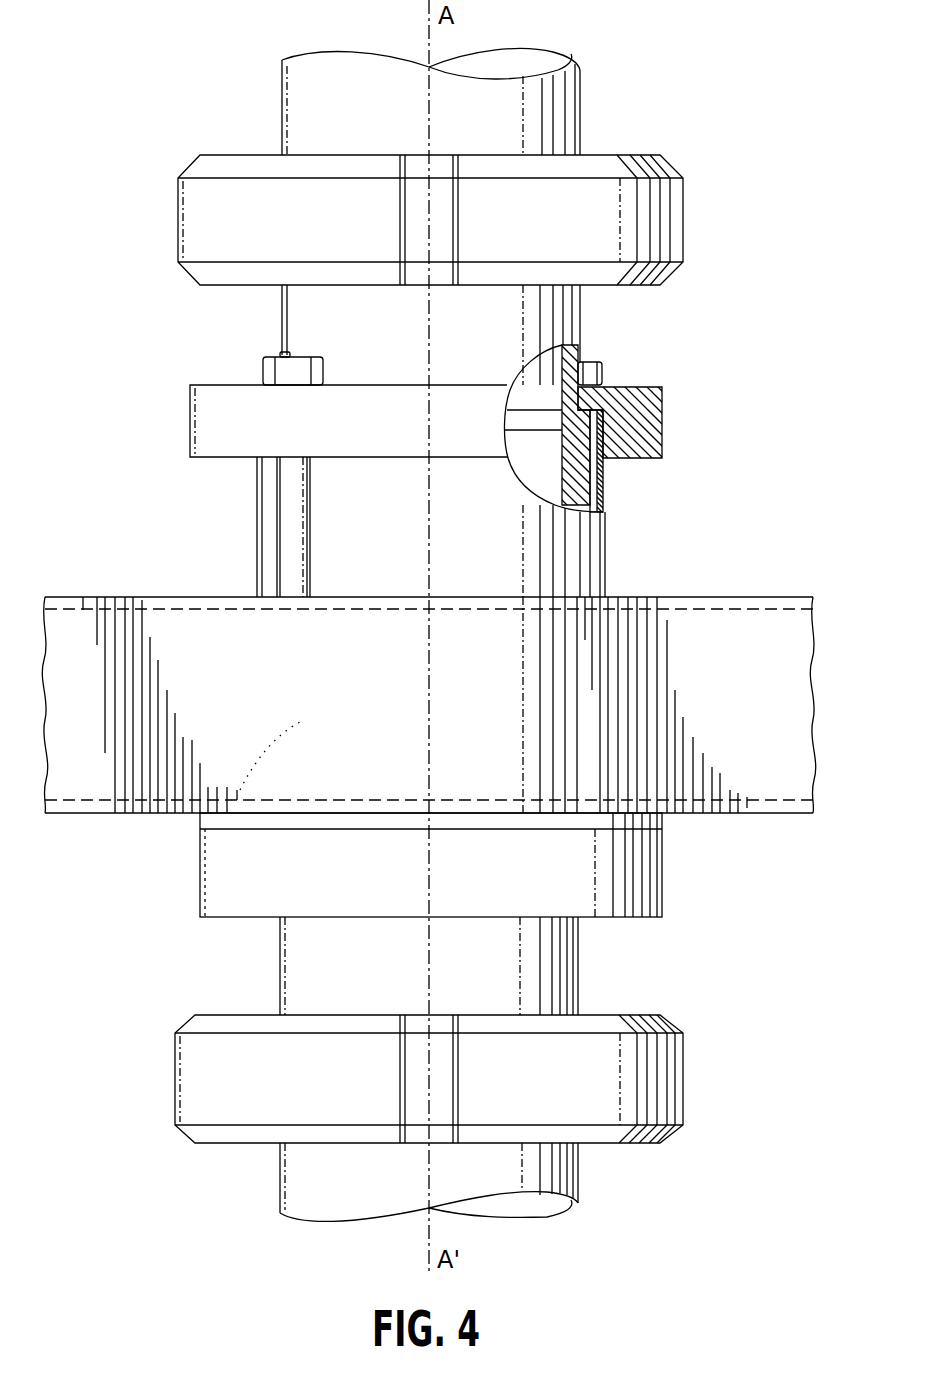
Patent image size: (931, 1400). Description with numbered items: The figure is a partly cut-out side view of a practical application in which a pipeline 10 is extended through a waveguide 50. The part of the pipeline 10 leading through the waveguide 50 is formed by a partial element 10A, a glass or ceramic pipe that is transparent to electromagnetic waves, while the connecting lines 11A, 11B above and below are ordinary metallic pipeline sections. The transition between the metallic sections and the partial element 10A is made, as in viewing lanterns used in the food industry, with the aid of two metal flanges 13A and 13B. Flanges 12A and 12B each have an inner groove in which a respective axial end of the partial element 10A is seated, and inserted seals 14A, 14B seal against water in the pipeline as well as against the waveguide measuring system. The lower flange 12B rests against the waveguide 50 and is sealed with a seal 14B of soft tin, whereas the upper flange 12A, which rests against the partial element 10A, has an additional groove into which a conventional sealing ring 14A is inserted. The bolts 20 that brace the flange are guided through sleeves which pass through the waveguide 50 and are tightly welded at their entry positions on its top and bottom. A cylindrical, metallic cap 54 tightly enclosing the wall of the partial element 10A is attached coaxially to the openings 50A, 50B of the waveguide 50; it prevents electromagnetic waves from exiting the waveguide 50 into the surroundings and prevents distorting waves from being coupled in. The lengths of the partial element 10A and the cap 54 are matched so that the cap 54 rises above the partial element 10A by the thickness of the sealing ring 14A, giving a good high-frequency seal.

The pipeline 10 is at (586, 81).
The partial element 10A is at (601, 513).
The connecting line 11A is at (300, 108).
The connecting line 11B is at (294, 1187).
The upper flange 12A is at (663, 417).
The lower flange 12B is at (661, 869).
The metal flange 13A is at (585, 304).
The metal flange 13B is at (585, 983).
The sealing ring 14A is at (586, 402).
The seal 14B is at (663, 821).
The bolt 20 is at (262, 371).
The waveguide 50 is at (747, 587).
The opening 50A is at (257, 584).
The opening 50B is at (263, 808).
The cylindrical metallic cap 54 is at (600, 478).